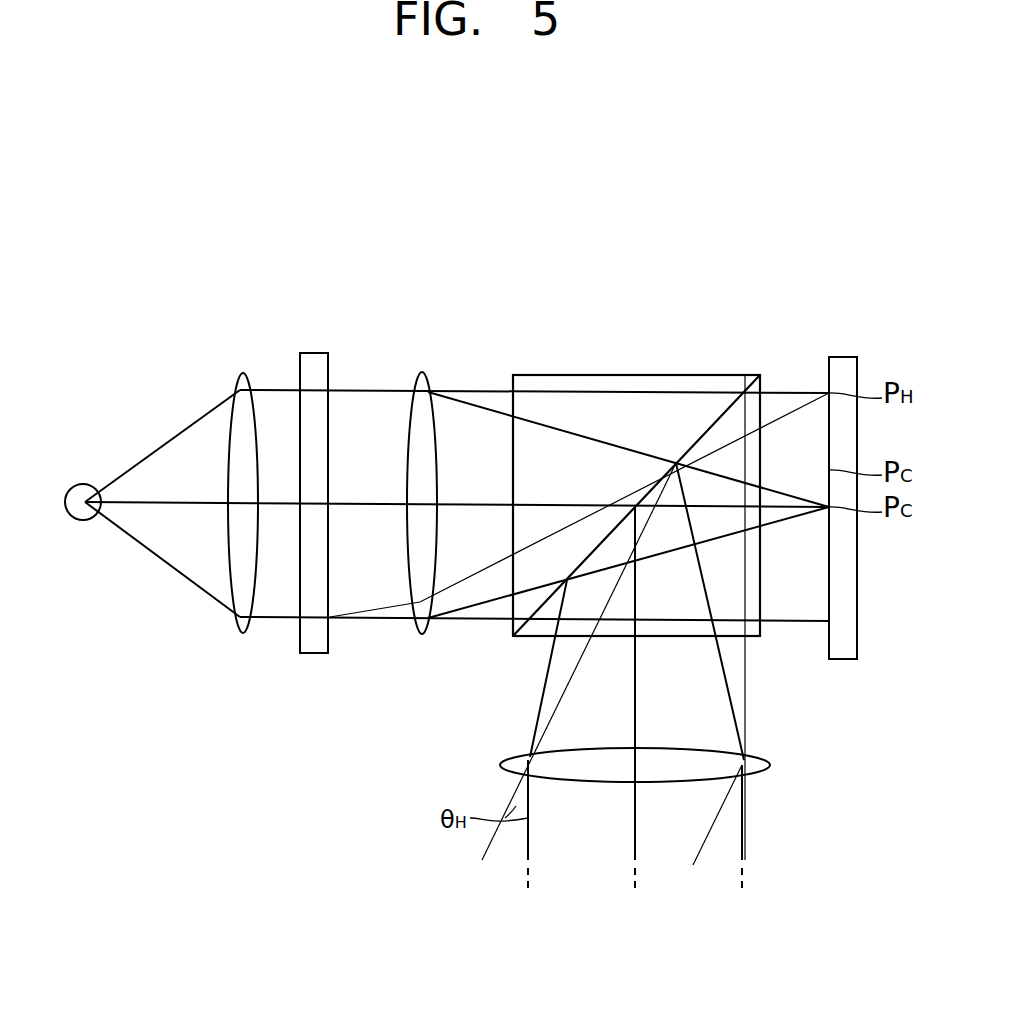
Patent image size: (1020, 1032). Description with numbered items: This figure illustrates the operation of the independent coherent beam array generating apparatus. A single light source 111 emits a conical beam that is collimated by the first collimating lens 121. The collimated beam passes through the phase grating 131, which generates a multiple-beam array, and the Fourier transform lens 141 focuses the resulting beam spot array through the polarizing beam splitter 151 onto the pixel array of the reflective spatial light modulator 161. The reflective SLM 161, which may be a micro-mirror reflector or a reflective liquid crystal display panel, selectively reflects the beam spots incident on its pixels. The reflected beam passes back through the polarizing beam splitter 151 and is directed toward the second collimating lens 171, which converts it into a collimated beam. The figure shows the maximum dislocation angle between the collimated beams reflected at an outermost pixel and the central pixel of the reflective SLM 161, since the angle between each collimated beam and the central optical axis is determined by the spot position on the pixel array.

The light source 111 is at (72, 518).
The first collimating lens 121 is at (243, 633).
The phase grating 131 is at (313, 653).
The Fourier transform lens 141 is at (421, 635).
The polarizing beam splitter 151 is at (640, 375).
The reflective spatial light modulator 161 is at (842, 659).
The second collimating lens 171 is at (500, 765).